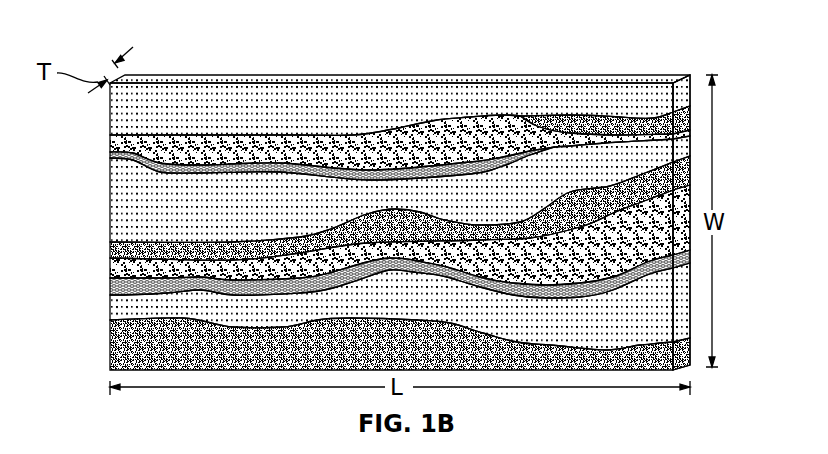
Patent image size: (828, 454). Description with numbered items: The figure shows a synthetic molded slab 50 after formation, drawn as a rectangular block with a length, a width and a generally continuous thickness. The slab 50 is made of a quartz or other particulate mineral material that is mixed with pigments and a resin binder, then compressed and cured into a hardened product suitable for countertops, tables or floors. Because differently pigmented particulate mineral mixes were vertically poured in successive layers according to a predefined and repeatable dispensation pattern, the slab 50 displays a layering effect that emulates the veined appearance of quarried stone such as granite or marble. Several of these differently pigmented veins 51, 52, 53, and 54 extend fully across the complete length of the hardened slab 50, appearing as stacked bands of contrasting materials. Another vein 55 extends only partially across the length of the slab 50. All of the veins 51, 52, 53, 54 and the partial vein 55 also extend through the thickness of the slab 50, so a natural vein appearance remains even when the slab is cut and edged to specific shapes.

The synthetic molded slab 50 is at (240, 72).
The vein 51 is at (118, 255).
The vein 52 is at (120, 103).
The vein 53 is at (112, 157).
The vein 54 is at (113, 142).
The partial vein 55 is at (683, 120).